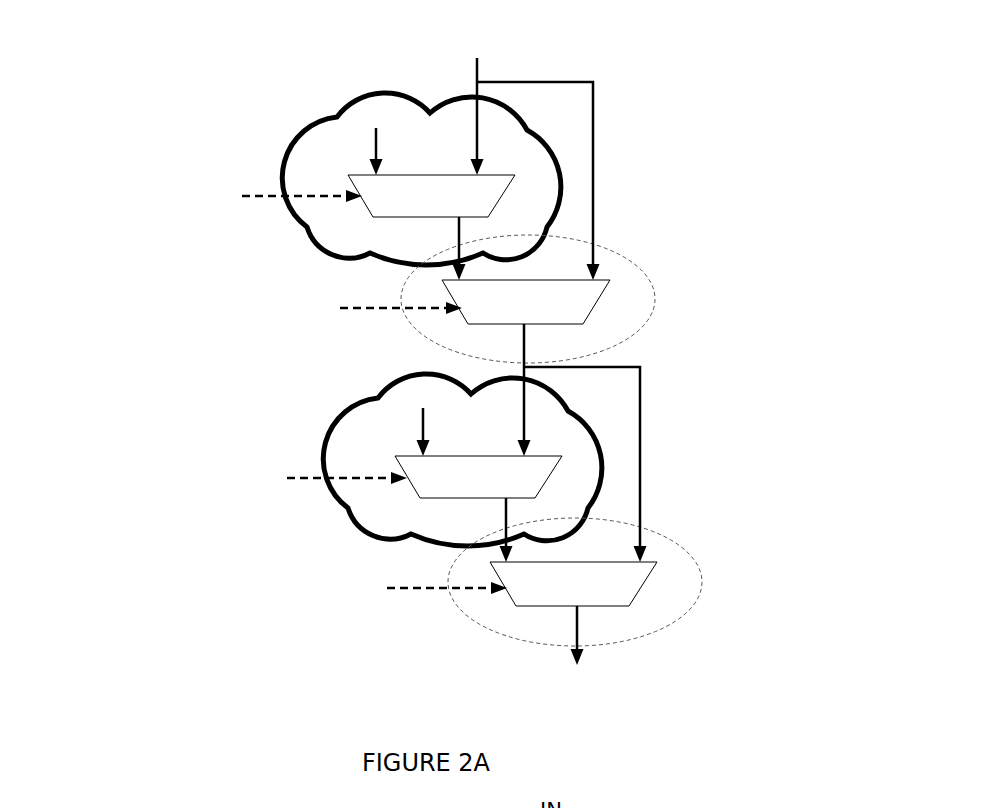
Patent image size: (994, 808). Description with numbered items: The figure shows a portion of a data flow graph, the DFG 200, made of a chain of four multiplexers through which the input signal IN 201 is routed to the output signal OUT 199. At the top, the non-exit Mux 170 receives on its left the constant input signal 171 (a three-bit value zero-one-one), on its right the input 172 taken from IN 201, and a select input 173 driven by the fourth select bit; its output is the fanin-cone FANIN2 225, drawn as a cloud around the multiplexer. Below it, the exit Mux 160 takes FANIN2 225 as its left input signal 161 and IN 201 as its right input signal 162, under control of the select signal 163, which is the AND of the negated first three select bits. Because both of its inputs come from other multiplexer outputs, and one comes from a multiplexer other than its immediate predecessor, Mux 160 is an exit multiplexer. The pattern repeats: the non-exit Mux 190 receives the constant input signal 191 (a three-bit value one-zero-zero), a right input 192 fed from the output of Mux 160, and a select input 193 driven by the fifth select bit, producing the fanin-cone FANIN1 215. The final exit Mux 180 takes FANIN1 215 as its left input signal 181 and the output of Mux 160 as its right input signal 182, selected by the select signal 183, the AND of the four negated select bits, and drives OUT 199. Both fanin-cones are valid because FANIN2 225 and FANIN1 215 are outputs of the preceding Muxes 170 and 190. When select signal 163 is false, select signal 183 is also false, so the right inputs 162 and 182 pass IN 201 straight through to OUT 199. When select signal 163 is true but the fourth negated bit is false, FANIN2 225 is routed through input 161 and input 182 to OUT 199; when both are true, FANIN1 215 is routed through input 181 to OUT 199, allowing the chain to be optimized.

The DFG 200 is at (181, 64).
The input signal IN 201 is at (477, 55).
The input signal 171 is at (411, 149).
The data input line to MUX 170 172 is at (498, 128).
The Mux 170 is at (483, 208).
The select signal S[3] 173 is at (255, 198).
The FANIN2 225 is at (421, 179).
The left input signal 161 is at (482, 250).
The right input signal 162 is at (560, 181).
The exit Mux 160 is at (590, 314).
The select signal !S[0] & !S[1] & !S[2] 163 is at (268, 310).
The input signal 191 is at (460, 429).
The data input line to MUX 190 192 is at (545, 390).
The Mux 190 is at (530, 490).
The select signal S[4] 193 is at (299, 480).
The FANIN1 215 is at (462, 460).
The left input signal 181 is at (533, 530).
The right input signal 182 is at (608, 464).
The exit Mux 180 is at (635, 596).
The select signal !S[0] & !S[1] & !S[2] & !S[3] 183 is at (273, 591).
The output signal OUT 199 is at (577, 666).